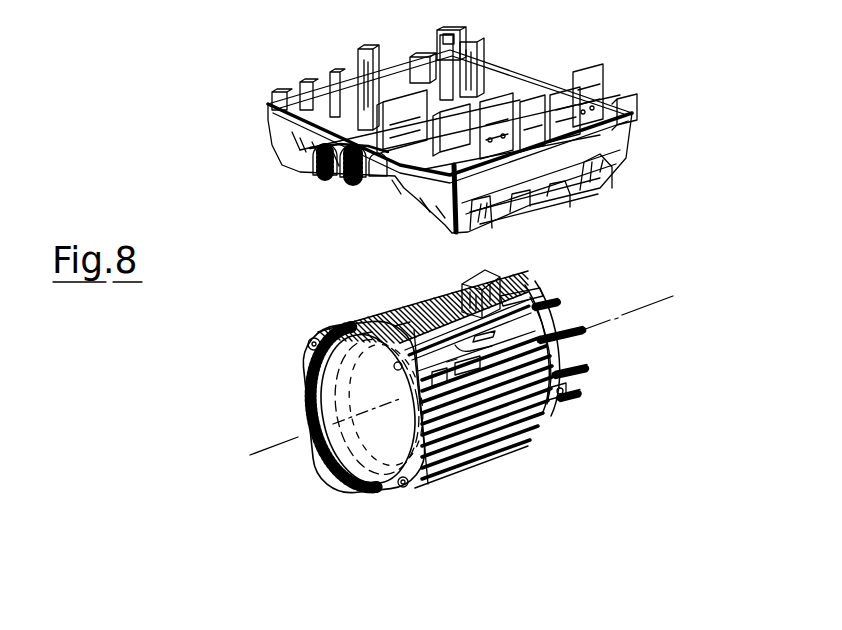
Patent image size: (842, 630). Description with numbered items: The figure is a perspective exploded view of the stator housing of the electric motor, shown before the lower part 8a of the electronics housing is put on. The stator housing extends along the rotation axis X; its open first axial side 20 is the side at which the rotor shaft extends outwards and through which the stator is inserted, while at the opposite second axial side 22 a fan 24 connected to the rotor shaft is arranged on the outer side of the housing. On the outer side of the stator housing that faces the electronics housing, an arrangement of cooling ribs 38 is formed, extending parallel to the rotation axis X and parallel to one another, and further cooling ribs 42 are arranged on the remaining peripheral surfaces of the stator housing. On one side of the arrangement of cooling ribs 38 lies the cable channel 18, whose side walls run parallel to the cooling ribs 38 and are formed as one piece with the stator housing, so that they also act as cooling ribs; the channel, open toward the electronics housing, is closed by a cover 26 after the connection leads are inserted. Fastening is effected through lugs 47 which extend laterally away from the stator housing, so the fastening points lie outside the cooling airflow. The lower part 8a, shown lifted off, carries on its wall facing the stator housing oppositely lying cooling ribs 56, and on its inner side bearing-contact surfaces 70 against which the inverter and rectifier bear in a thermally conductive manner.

The bearing-contact surfaces 70 is at (507, 77).
The lower part 8a is at (620, 150).
The cooling ribs 56 is at (315, 176).
The cable channel 18 is at (530, 304).
The rotation axis X is at (644, 306).
The cooling ribs 38 is at (403, 300).
The cooling ribs 42 is at (520, 443).
The cover 26 is at (312, 352).
The first axial side 20 is at (324, 457).
The lugs 47 is at (408, 418).
The second axial side 22 is at (584, 383).
The fan 24 is at (566, 394).